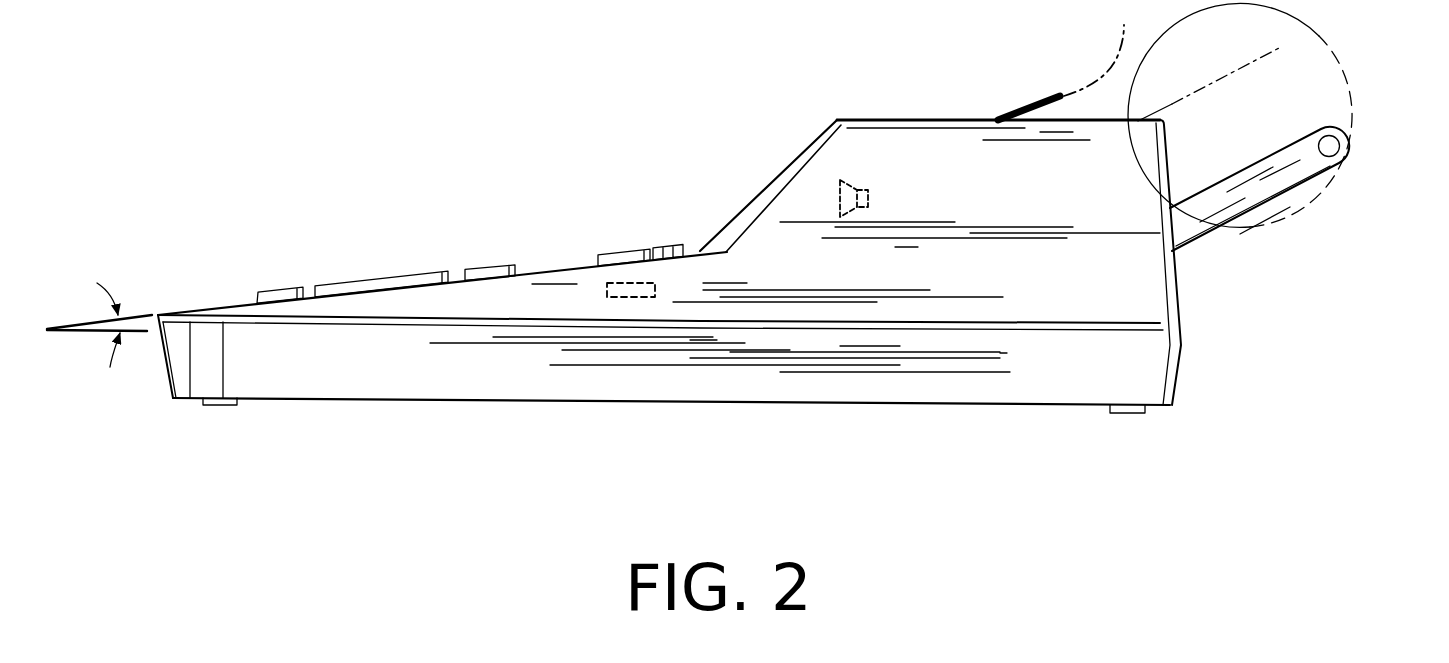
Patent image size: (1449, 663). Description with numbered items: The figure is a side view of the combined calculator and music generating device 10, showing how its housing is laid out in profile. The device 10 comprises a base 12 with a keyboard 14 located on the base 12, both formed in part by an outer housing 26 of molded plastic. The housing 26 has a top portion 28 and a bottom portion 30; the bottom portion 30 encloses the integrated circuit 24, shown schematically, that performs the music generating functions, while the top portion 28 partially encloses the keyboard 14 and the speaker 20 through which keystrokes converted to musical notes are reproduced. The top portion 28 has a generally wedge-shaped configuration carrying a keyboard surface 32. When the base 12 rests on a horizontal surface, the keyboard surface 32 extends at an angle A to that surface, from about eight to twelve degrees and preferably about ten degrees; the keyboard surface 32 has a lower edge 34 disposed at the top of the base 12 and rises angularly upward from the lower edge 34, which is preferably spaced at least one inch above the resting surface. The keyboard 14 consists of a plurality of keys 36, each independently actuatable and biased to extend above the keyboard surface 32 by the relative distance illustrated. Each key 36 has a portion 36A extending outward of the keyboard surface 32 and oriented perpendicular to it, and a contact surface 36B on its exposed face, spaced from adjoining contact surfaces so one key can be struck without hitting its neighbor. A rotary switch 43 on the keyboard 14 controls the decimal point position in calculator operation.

The combined calculator and music generating device 10 is at (699, 246).
The base 12 is at (833, 410).
The keyboard 14 is at (240, 298).
The speaker 20 is at (838, 196).
The integrated circuit 24 is at (628, 303).
The outer housing 26 is at (1180, 373).
The top portion 28 is at (1107, 283).
The bottom portion 30 is at (1010, 368).
The keyboard surface 32 is at (565, 264).
The lower edge 34 is at (158, 315).
The keys 36 is at (327, 282).
The key portion 36A is at (452, 274).
The contact surface 36B is at (370, 277).
The rotary switch 43 is at (660, 245).
The angle A is at (125, 323).